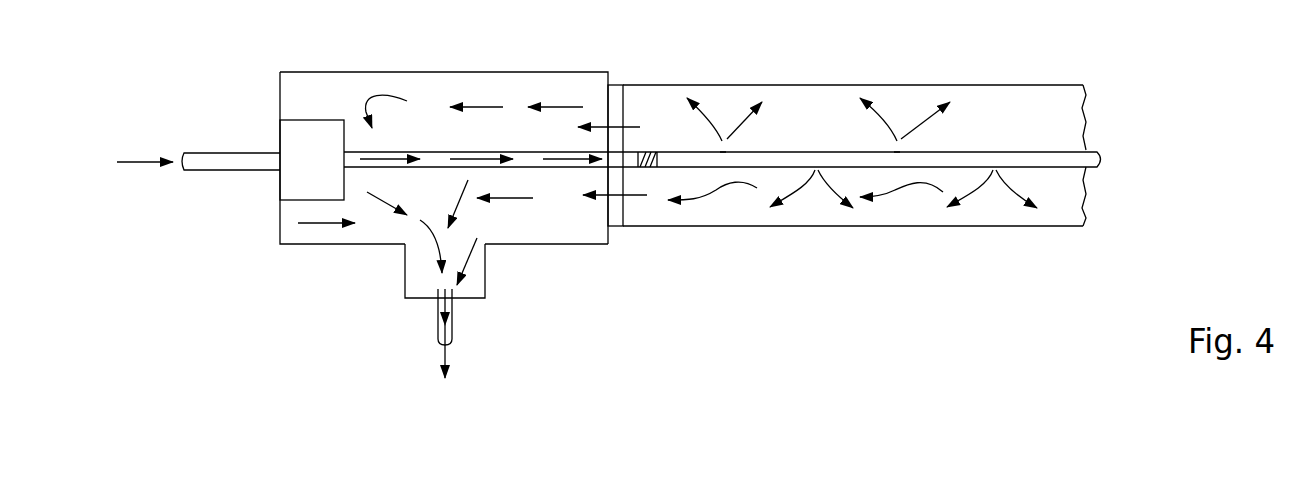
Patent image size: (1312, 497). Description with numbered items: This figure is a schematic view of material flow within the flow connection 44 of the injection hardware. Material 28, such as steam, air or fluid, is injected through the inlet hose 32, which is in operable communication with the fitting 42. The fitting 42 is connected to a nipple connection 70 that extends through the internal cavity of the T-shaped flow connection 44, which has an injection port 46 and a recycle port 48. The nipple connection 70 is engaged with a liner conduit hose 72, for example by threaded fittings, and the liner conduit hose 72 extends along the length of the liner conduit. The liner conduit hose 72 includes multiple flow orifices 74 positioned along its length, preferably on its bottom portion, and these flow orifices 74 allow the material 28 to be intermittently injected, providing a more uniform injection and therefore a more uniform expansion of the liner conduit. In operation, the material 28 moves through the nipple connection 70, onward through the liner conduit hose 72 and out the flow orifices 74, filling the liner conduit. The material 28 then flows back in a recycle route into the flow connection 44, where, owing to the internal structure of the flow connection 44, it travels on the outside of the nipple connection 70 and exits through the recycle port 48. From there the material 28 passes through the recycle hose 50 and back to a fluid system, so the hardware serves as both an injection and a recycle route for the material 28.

The material 28 is at (131, 129).
The inlet hose 32 is at (250, 171).
The fitting 42 is at (280, 124).
The flow connection 44 is at (358, 278).
The injection port 46 is at (607, 72).
The recycle port 48 is at (405, 289).
The recycle hose 50 is at (453, 313).
The nipple connection 70 is at (572, 170).
The liner conduit hose 72 is at (827, 150).
The flow orifices 74 is at (725, 167).